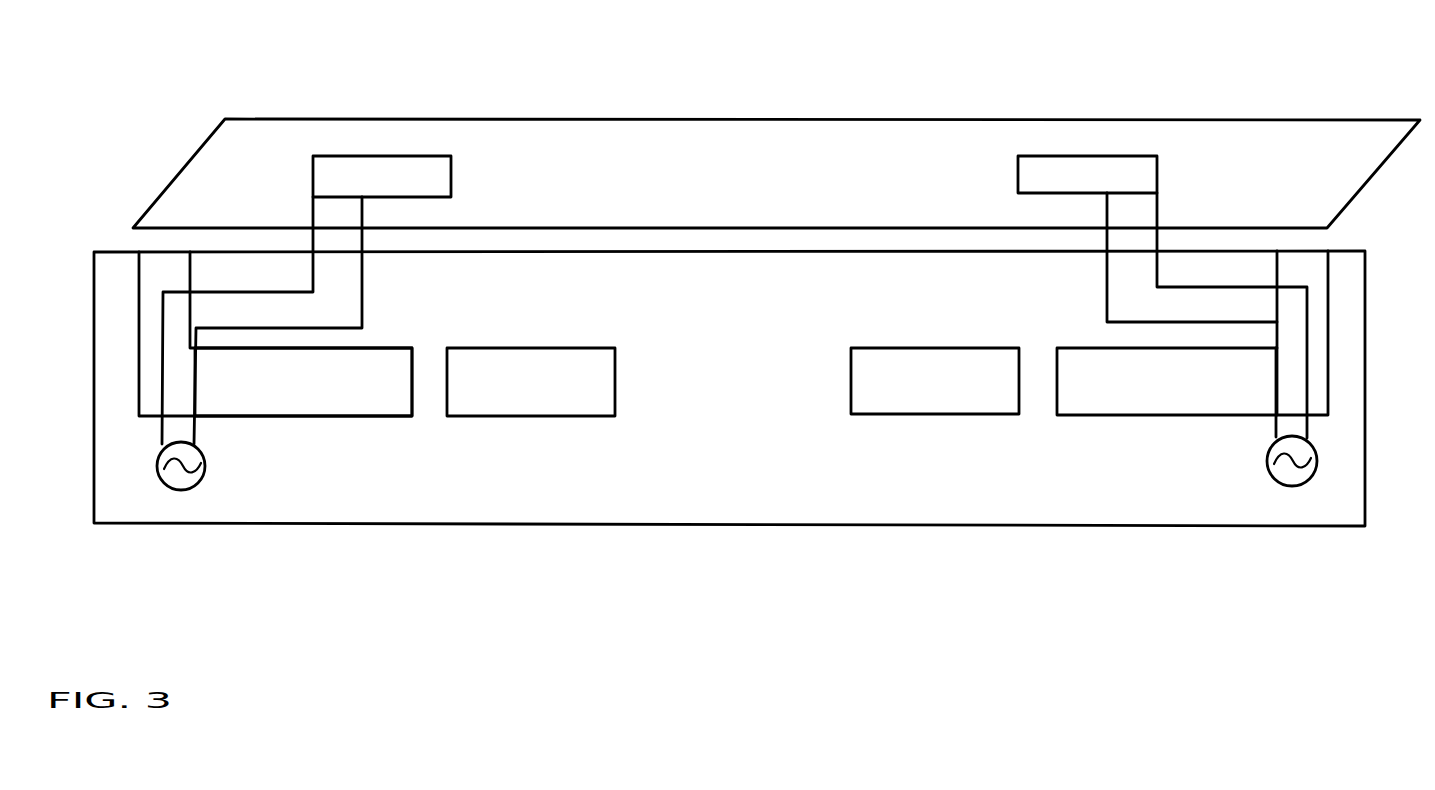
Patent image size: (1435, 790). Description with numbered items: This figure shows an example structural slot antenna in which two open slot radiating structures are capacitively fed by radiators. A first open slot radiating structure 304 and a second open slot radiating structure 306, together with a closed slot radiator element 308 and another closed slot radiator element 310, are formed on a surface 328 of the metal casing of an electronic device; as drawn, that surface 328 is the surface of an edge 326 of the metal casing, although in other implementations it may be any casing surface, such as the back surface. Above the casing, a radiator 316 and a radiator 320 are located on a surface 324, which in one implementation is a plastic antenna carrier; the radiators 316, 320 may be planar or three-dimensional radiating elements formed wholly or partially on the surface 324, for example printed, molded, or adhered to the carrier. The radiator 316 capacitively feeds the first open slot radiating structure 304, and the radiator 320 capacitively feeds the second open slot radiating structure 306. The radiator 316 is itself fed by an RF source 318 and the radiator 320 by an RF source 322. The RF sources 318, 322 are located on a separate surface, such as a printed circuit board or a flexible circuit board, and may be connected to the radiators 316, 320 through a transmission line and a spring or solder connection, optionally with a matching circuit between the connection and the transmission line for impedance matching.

The first open slot radiating structure 304 is at (308, 416).
The second open slot radiating structure 306 is at (1173, 415).
The closed slot radiator element 308 is at (523, 416).
The closed slot radiator element 310 is at (945, 414).
The radiator 316 is at (452, 172).
The RF source 318 is at (206, 467).
The radiator 320 is at (1018, 172).
The RF source 322 is at (1268, 461).
The surface 324 is at (1316, 120).
The edge 326 is at (892, 525).
The surface 328 is at (702, 478).